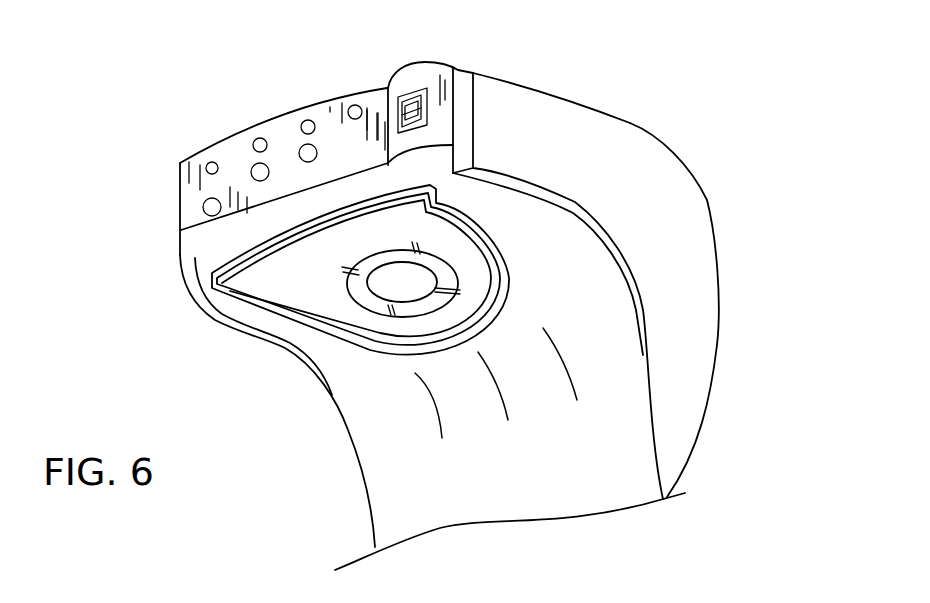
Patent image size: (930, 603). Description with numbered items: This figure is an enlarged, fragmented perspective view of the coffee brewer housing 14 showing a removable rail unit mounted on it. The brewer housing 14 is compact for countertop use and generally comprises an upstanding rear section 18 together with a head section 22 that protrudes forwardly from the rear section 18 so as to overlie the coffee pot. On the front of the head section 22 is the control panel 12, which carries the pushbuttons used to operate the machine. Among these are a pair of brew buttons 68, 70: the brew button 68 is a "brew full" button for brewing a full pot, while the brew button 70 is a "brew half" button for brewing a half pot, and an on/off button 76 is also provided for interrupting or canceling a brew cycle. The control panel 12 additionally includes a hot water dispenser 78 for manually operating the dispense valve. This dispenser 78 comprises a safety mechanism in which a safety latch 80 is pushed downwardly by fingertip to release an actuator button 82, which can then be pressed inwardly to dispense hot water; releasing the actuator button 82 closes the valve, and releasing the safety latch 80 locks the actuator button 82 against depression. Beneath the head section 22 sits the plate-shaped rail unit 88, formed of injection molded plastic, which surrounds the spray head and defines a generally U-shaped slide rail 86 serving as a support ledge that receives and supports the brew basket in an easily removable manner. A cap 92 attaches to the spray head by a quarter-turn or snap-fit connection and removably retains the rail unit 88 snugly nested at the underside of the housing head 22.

The control panel 12 is at (266, 108).
The brewer housing 14 is at (704, 206).
The rear section 18 is at (377, 480).
The head section 22 is at (587, 105).
The brew button 68 is at (253, 166).
The brew button 70 is at (302, 160).
The on/off button 76 is at (204, 212).
The hot water dispenser 78 is at (402, 65).
The safety latch 80 is at (415, 130).
The actuator button 82 is at (409, 100).
The slide rail 86 is at (371, 355).
The rail unit 88 is at (308, 300).
The cap 92 is at (413, 293).